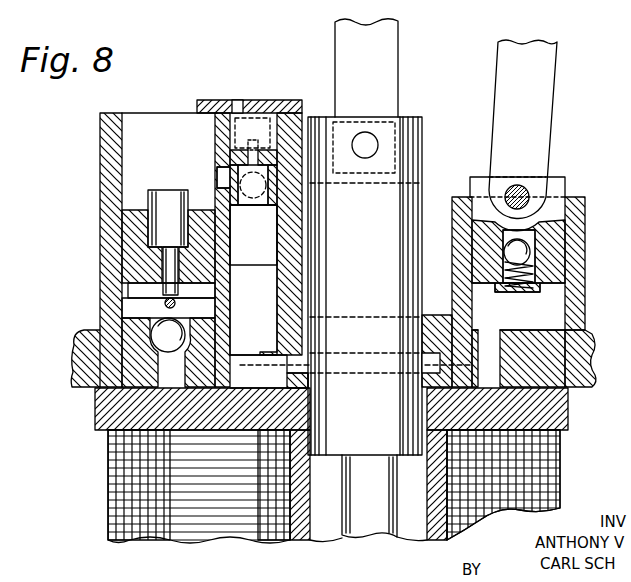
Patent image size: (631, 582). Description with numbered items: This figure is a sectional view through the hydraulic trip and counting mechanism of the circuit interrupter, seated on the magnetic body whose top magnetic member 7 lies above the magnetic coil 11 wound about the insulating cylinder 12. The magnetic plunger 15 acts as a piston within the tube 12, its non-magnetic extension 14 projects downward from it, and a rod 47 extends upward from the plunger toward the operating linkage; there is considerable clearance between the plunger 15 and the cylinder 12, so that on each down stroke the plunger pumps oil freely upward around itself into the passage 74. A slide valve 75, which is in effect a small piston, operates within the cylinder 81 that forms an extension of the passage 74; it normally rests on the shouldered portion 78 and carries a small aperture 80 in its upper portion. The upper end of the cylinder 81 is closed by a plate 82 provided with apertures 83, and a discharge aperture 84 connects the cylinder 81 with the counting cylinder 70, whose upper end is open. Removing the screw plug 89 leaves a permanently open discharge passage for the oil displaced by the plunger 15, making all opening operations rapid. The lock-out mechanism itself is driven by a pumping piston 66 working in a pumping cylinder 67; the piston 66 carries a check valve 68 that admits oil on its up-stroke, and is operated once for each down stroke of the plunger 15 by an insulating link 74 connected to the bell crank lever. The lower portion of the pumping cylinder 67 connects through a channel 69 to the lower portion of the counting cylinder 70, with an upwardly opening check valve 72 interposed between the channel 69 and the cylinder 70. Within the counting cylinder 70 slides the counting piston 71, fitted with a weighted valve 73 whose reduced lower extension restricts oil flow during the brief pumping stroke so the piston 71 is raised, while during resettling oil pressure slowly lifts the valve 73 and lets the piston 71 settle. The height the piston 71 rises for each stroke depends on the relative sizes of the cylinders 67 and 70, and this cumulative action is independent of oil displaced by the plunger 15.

The top magnetic member 7 is at (598, 356).
The magnetic coil 11 is at (108, 512).
The insulating cylinder 12 is at (312, 530).
The non-magnetic plunger extension 14 is at (370, 537).
The magnetic plunger 15 is at (425, 172).
The upper rod 47 is at (385, 70).
The pumping piston 66 is at (557, 230).
The pumping cylinder 67 is at (584, 274).
The check valve 68 is at (522, 250).
The channel 69 is at (244, 362).
The counting cylinder 70 is at (106, 266).
The counting piston 71 is at (128, 224).
The check valve 72 is at (165, 333).
The weighted valve 73 is at (165, 190).
The passage 74 is at (575, 92).
The slide valve 75 is at (281, 186).
The shouldered portion 78 is at (234, 232).
The aperture 80 is at (258, 150).
The cylinder 81 is at (222, 138).
The plate 82 is at (252, 118).
The apertures 83 is at (236, 100).
The discharge aperture 84 is at (218, 178).
The screw plug 89 is at (250, 198).